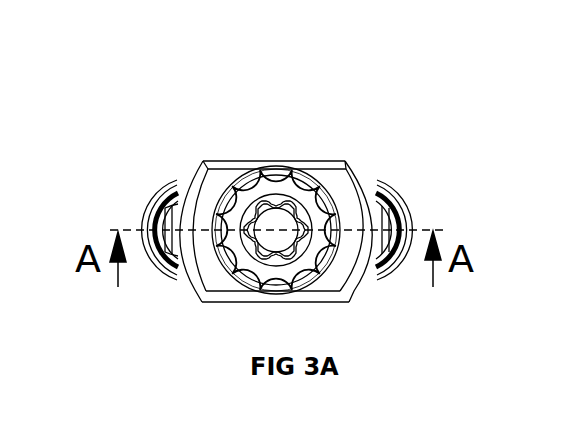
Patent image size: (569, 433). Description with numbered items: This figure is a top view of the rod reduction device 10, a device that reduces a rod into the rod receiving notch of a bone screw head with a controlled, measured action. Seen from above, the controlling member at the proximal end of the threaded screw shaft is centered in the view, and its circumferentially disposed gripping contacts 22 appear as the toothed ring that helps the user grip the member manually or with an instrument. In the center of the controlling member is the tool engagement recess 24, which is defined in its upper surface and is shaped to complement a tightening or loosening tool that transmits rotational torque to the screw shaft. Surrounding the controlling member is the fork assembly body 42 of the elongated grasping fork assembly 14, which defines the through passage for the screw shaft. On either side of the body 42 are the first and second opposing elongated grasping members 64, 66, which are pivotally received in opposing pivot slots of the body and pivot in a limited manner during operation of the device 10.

The rod reduction device 10 is at (460, 92).
The elongated grasping fork assembly 14 is at (162, 268).
The gripping contacts 22 is at (262, 176).
The tool engagement recess 24 is at (281, 218).
The fork assembly body 42 is at (337, 275).
The first elongated grasping member 64 is at (157, 193).
The second elongated grasping member 66 is at (392, 192).